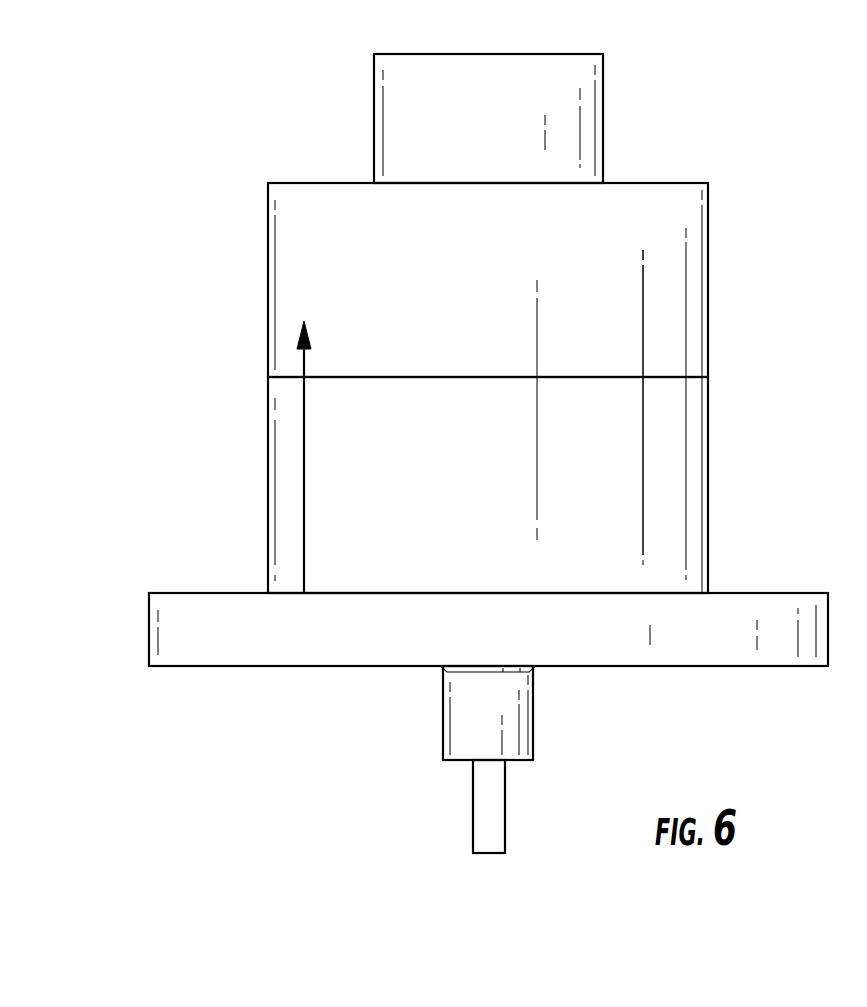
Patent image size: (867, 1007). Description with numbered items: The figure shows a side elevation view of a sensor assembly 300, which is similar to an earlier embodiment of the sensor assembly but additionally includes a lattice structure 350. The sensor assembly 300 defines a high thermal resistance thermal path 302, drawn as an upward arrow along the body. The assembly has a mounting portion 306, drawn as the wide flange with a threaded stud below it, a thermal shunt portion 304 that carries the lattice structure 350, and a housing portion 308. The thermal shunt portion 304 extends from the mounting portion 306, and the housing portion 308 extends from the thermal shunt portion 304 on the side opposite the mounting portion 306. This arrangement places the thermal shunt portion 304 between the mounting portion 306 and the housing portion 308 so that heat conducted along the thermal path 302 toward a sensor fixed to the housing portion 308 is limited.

The sensor assembly 300 is at (435, 453).
The high thermal resistance thermal path 302 is at (304, 477).
The thermal shunt portion 304 is at (227, 270).
The mounting portion 306 is at (468, 421).
The housing portion 308 is at (120, 613).
The lattice structure 350 is at (660, 487).